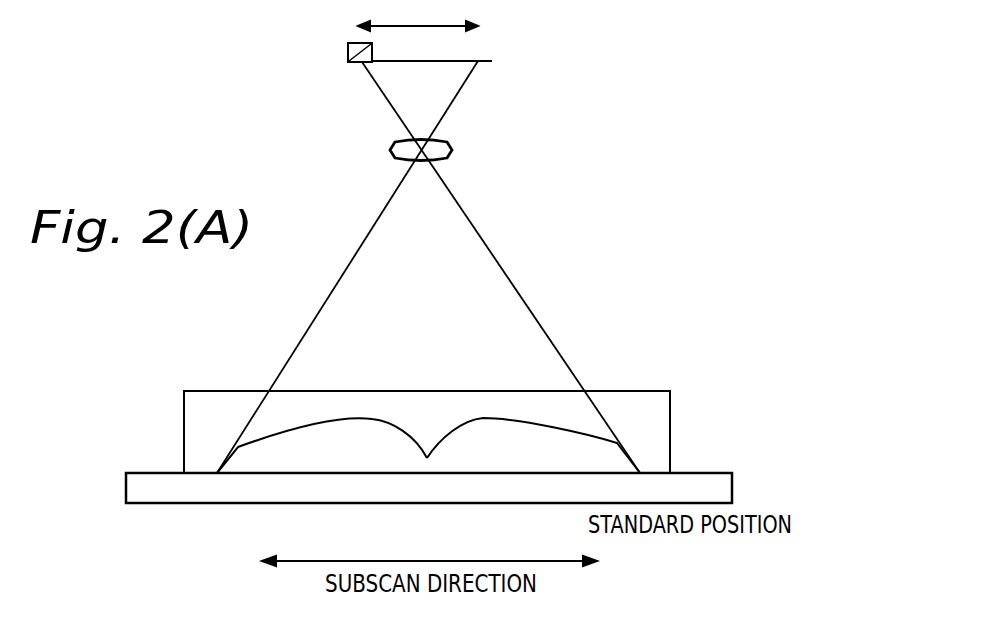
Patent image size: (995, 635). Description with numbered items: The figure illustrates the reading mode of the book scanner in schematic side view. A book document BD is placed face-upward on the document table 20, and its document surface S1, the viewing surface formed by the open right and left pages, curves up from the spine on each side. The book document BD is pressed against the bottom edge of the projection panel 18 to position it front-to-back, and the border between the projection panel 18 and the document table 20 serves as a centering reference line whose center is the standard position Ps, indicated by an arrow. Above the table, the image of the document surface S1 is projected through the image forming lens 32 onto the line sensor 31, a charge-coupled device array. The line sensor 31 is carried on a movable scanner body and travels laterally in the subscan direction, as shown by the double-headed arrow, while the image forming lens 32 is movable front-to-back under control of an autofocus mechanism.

The line sensor 31 is at (348, 52).
The image forming lens 32 is at (453, 152).
The projection panel 18 is at (637, 391).
The document table 20 is at (700, 473).
The book document BD is at (365, 427).
The document surface S1 is at (490, 418).
The standard position Ps is at (427, 474).